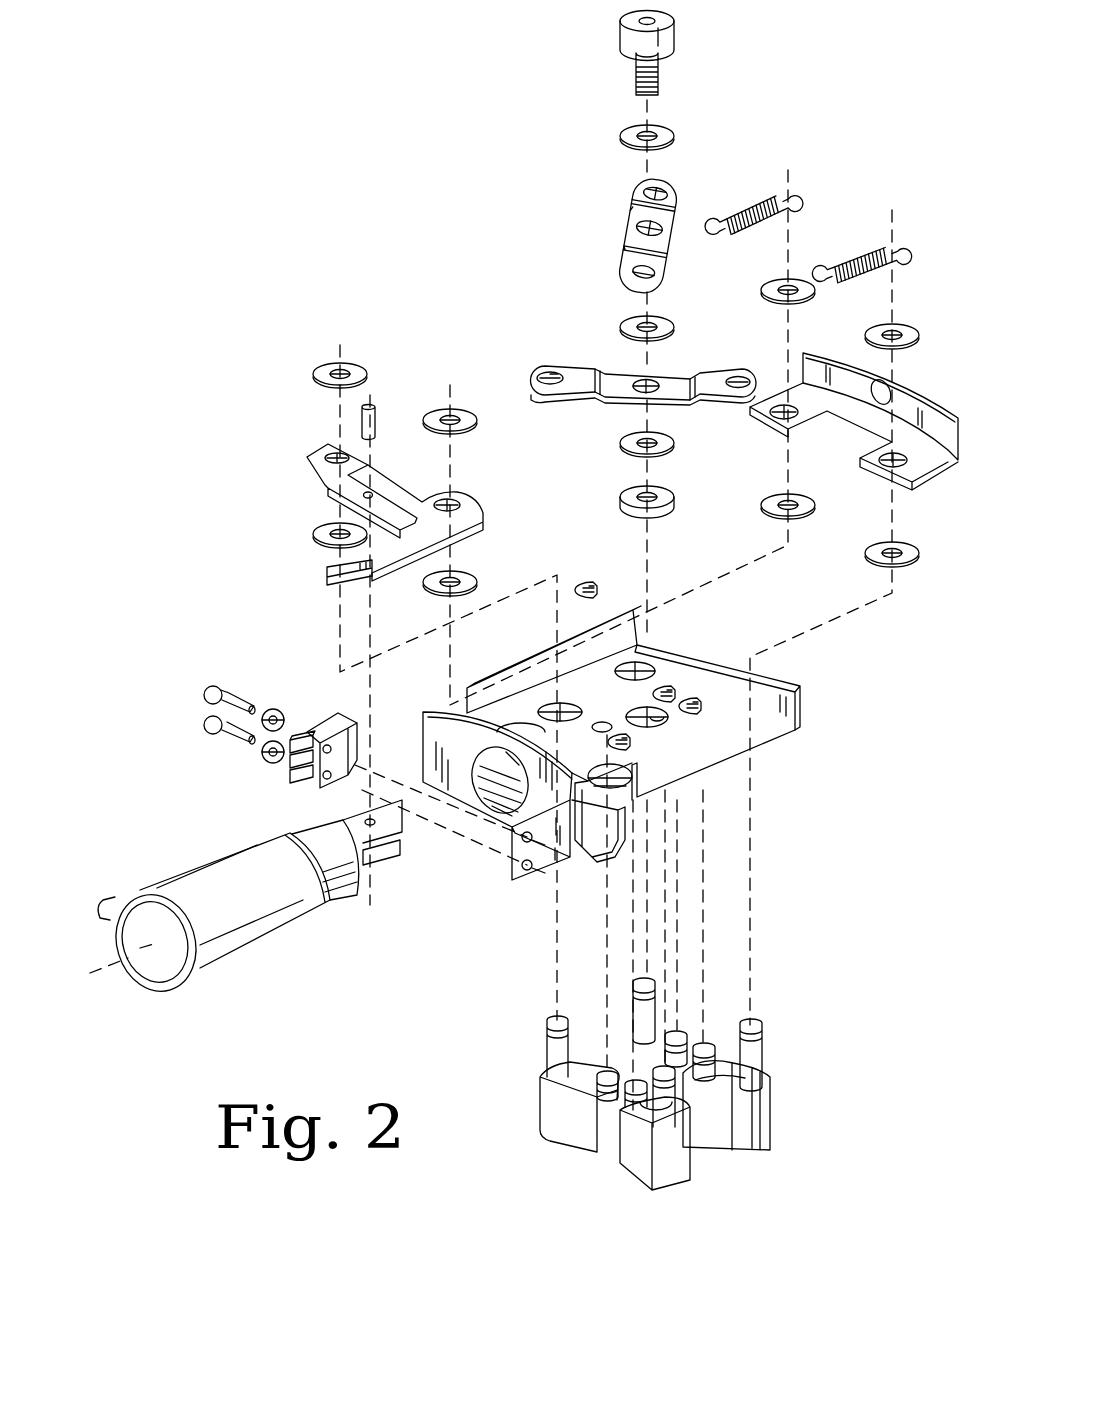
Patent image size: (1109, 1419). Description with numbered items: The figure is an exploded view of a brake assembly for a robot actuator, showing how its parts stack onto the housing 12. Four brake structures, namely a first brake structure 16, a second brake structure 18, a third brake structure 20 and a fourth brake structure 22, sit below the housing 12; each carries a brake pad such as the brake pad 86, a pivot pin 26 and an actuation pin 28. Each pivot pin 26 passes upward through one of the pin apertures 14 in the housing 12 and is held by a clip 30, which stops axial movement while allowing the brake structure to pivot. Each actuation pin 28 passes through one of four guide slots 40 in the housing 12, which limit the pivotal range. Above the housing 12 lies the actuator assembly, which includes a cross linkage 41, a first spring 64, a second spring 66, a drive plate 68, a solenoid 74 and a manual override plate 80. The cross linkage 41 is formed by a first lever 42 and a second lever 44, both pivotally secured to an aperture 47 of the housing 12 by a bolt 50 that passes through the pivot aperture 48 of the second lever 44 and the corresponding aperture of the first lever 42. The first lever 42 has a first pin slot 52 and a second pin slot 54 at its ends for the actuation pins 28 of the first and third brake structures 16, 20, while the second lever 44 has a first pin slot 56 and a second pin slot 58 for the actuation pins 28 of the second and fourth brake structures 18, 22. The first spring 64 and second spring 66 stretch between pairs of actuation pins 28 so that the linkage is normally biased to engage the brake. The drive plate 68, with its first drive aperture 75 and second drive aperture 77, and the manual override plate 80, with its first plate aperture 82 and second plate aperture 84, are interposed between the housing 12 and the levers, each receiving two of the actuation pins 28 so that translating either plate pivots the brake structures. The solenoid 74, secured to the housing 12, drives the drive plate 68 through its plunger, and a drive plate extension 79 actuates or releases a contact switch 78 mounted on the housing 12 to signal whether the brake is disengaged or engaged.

The housing 12 is at (621, 737).
The pin aperture 14 is at (598, 722).
The first brake structure 16 is at (783, 1134).
The second brake structure 18 is at (666, 1208).
The third brake structure 20 is at (548, 1155).
The fourth brake structure 22 is at (630, 995).
The pivot pin 26 is at (598, 1072).
The actuation pin 28 is at (545, 1047).
The clip 30 is at (598, 584).
The guide slot 40 is at (556, 704).
The cross linkage 41 is at (463, 213).
The first lever 42 is at (708, 367).
The second lever 44 is at (665, 190).
The aperture 47 is at (776, 730).
The pivot aperture 48 is at (636, 224).
The bolt 50 is at (676, 33).
The first pin slot 52 is at (758, 351).
The second pin slot 54 is at (546, 417).
The first pin slot 56 is at (693, 260).
The second pin slot 58 is at (617, 163).
The first spring 64 is at (846, 255).
The second spring 66 is at (747, 210).
The drive plate 68 is at (377, 488).
The solenoid 74 is at (245, 950).
The first drive aperture 75 is at (475, 475).
The second drive aperture 77 is at (332, 455).
The contact switch 78 is at (322, 798).
The drive plate extension 79 is at (297, 595).
The manual override plate 80 is at (924, 395).
The first plate aperture 82 is at (925, 495).
The second plate aperture 84 is at (749, 443).
The brake pad 86 is at (728, 1155).